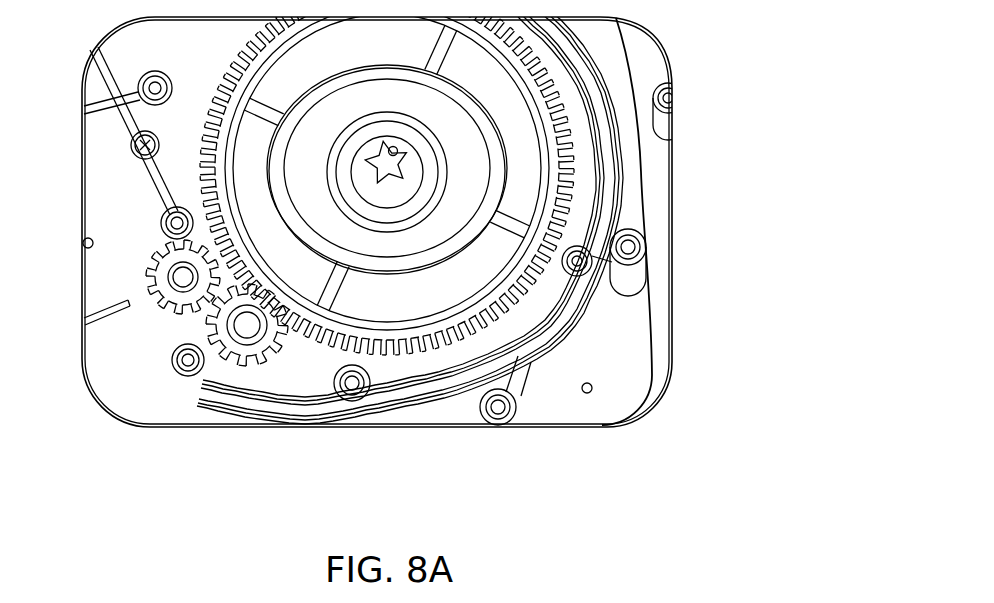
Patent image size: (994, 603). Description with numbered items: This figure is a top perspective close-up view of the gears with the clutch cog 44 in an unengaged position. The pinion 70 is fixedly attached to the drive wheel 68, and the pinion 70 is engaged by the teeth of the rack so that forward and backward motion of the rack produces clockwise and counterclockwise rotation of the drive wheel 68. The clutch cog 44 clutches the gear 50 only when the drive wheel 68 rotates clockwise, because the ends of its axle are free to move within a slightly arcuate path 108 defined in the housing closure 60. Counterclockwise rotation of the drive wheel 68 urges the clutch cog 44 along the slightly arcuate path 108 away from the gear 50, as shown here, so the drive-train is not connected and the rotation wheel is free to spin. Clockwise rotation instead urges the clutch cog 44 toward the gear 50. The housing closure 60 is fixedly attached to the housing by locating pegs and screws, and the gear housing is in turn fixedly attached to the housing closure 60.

The clutch cog 44 is at (267, 355).
The gear 50 is at (187, 297).
The housing closure 60 is at (628, 348).
The drive wheel 68 is at (527, 205).
The pinion 70 is at (400, 160).
The slightly arcuate path 108 is at (187, 353).